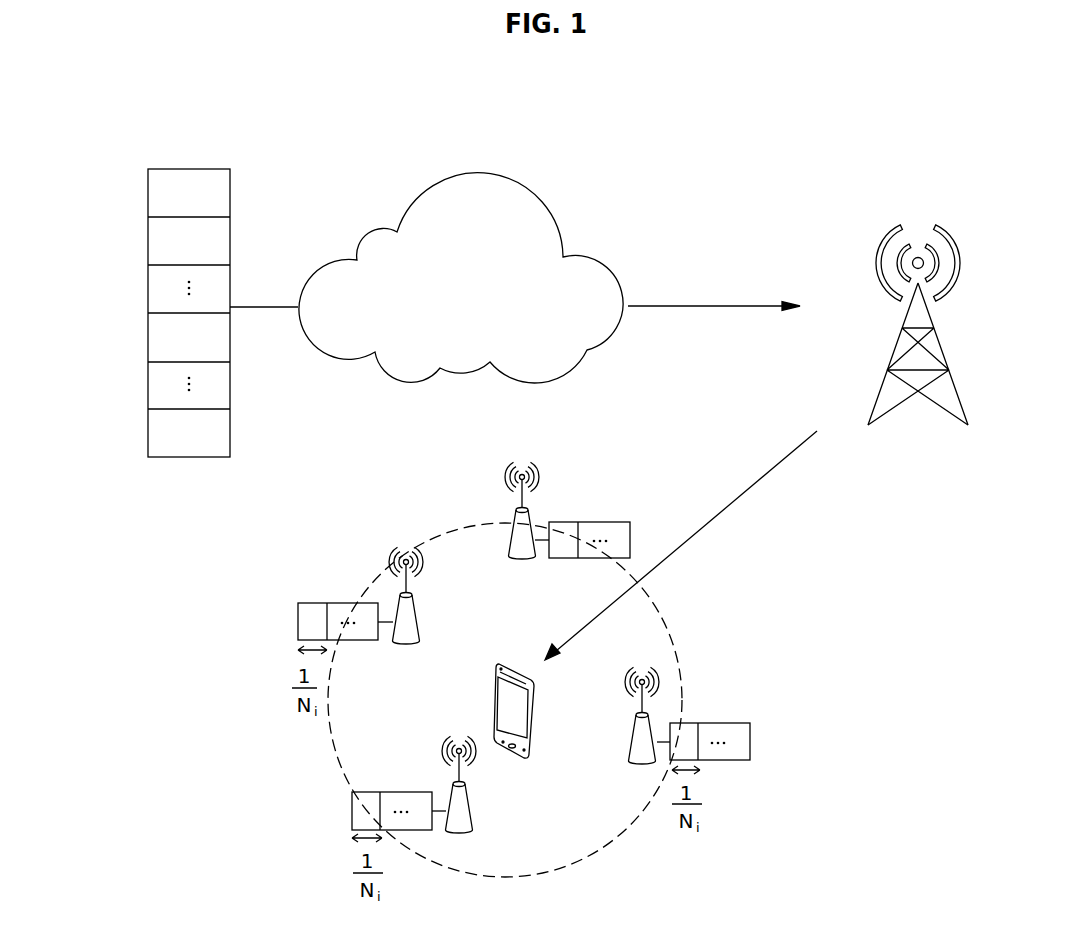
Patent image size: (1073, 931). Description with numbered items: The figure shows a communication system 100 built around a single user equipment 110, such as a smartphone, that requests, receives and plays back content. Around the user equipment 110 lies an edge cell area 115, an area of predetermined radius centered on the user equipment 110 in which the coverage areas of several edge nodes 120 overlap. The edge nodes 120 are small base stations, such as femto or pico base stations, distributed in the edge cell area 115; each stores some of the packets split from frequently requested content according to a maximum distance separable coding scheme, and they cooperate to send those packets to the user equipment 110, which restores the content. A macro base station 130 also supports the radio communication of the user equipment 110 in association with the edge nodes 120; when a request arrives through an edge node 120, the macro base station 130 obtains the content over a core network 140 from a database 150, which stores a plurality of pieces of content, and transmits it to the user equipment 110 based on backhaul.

The communication system 100 is at (893, 157).
The user equipment 110 is at (495, 700).
The edge cell area 115 is at (335, 761).
The edge nodes 120 is at (518, 526).
The macro base station 130 is at (948, 352).
The core network 140 is at (563, 258).
The database 150 is at (148, 296).